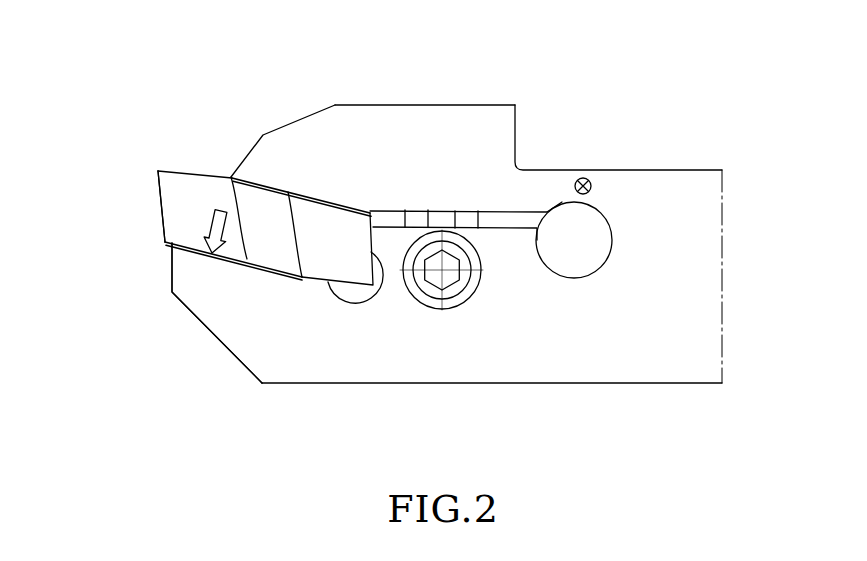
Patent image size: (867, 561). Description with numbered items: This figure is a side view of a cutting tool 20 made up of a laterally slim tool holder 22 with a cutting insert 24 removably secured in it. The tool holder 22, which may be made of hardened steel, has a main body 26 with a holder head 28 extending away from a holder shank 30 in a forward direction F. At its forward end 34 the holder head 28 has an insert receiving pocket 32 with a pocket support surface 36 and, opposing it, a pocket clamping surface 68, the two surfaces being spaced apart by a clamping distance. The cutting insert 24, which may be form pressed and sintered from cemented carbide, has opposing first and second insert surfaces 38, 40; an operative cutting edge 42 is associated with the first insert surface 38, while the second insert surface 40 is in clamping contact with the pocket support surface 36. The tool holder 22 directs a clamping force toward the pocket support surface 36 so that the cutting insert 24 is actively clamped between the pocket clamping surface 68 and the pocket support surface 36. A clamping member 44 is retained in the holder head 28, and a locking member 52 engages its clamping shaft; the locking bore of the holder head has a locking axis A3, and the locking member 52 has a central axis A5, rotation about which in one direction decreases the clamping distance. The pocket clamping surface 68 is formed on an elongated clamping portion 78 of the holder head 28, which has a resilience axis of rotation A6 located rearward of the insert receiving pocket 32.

The cutting tool 20 is at (318, 72).
The tool holder 22 is at (487, 190).
The cutting insert 24 is at (168, 207).
The main body 26 is at (521, 310).
The holder head 28 is at (301, 348).
The holder shank 30 is at (653, 330).
The insert receiving pocket 32 is at (312, 283).
The forward end 34 is at (158, 276).
The pocket support surface 36 is at (175, 236).
The first insert surface 38 is at (272, 160).
The second insert surface 40 is at (229, 270).
The operative cutting edge 42 is at (157, 170).
The clamping member 44 is at (446, 208).
The locking member 52 is at (428, 305).
The pocket clamping surface 68 is at (240, 189).
The elongated clamping portion 78 is at (428, 190).
The locking axis A3 is at (442, 270).
The central axis A5 is at (441, 270).
The resilience axis of rotation A6 is at (591, 186).
The forward direction F is at (212, 230).